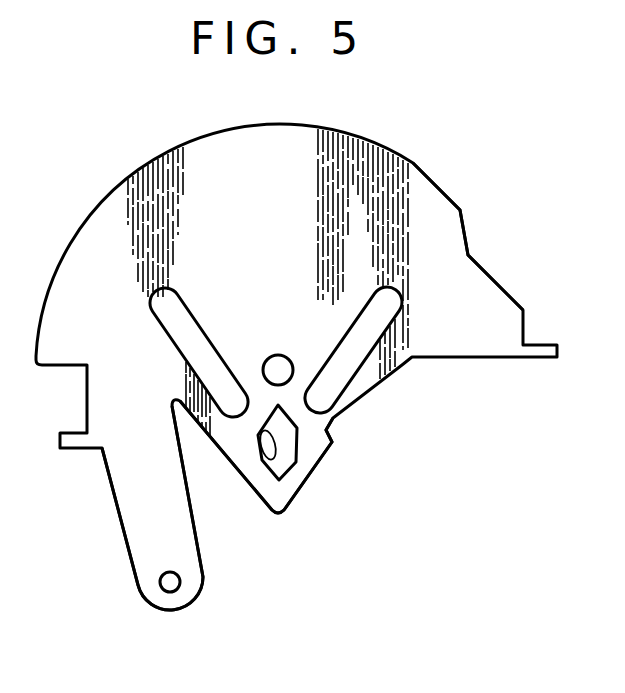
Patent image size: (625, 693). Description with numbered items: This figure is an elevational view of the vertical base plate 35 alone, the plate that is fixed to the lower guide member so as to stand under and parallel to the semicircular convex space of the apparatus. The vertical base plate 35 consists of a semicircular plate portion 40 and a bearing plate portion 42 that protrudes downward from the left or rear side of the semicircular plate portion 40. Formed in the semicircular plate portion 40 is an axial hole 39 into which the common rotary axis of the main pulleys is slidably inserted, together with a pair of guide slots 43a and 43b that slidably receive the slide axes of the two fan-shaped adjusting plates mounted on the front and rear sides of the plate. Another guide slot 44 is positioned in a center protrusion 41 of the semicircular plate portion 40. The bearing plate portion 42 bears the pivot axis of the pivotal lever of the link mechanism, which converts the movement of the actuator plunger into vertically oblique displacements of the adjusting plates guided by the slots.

The vertical base plate 35 is at (413, 166).
The axial hole 39 is at (281, 354).
The semicircular plate portion 40 is at (312, 197).
The center protrusion 41 is at (308, 462).
The bearing plate portion 42 is at (133, 522).
The guide slot 43a is at (366, 360).
The guide slot 43b is at (164, 329).
The guide slot 44 is at (266, 464).